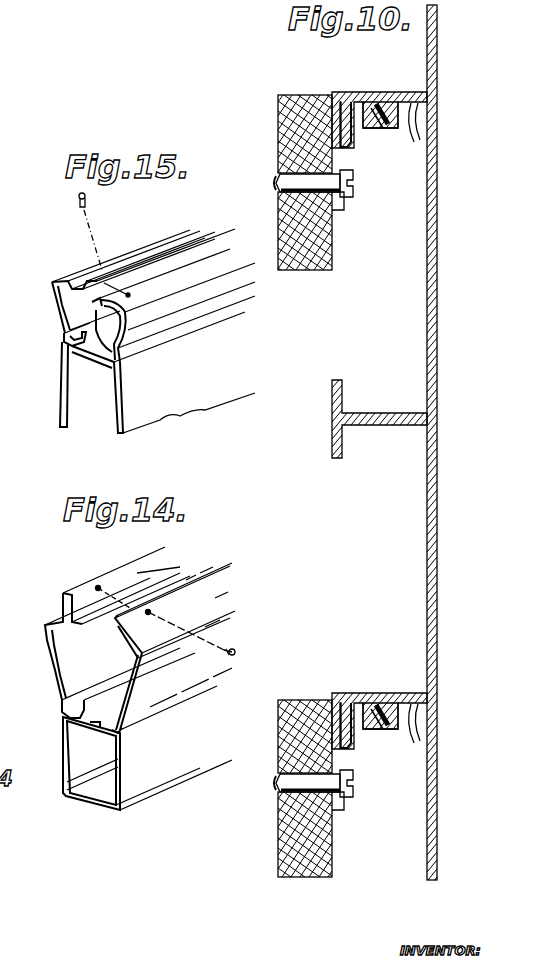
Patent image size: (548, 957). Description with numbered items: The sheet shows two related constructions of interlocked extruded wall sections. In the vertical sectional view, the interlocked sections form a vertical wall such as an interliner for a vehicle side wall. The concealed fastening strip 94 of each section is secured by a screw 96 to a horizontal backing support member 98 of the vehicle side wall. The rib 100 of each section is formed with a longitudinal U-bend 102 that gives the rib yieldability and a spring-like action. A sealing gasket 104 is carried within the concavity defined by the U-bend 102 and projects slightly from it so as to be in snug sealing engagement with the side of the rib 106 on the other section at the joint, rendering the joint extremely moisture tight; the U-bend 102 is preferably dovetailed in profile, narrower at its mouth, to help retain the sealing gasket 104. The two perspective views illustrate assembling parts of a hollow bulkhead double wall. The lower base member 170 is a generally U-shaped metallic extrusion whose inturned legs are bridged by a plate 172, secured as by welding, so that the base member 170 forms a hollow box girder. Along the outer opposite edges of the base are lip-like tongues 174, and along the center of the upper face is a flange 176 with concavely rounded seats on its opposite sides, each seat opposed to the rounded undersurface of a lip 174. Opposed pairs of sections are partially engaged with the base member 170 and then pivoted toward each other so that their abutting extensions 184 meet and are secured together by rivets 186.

In FIG. 10, the concealed fastening strip 94 is at (345, 200).
In FIG. 10, the screw 96 is at (276, 180).
In FIG. 10, the horizontal backing support member 98 is at (310, 270).
In FIG. 10, the rib 100 is at (407, 108).
In FIG. 10, the U-bend 102 is at (379, 128).
In FIG. 10, the sealing gasket 104 is at (378, 103).
In FIG. 10, the rib 106 is at (352, 92).
In FIG. 14, the lower base member 170 is at (140, 784).
In FIG. 14, the plate 172 is at (92, 808).
In FIG. 14, the lip 174 is at (64, 709).
In FIG. 14, the flange 176 is at (90, 728).
In FIG. 14, the extension 184 is at (182, 593).
In FIG. 14, the rivet 186 is at (228, 660).